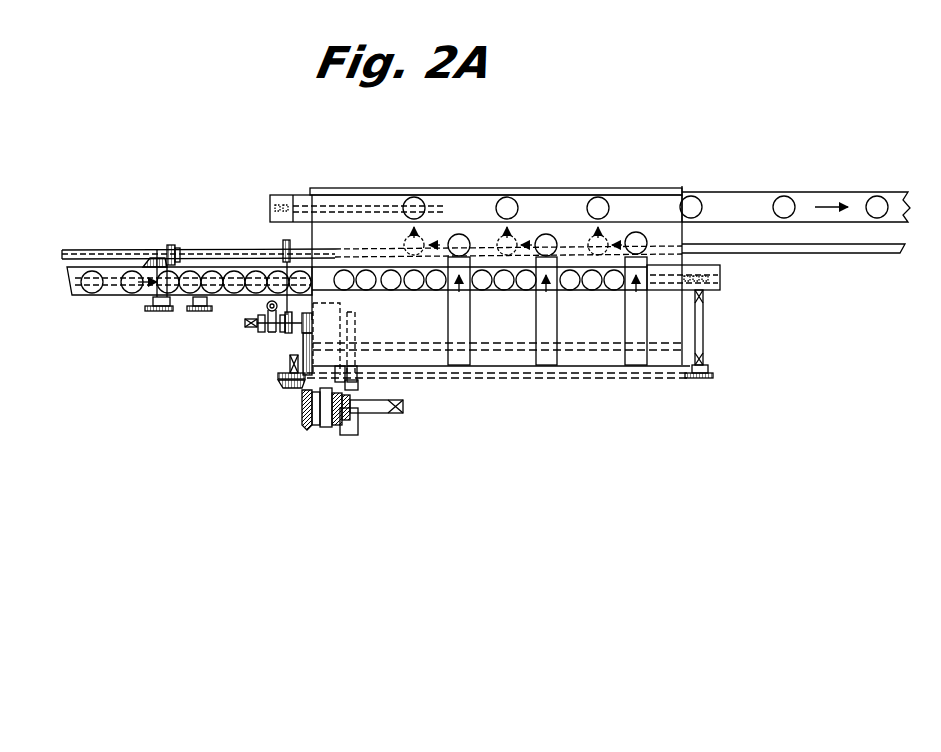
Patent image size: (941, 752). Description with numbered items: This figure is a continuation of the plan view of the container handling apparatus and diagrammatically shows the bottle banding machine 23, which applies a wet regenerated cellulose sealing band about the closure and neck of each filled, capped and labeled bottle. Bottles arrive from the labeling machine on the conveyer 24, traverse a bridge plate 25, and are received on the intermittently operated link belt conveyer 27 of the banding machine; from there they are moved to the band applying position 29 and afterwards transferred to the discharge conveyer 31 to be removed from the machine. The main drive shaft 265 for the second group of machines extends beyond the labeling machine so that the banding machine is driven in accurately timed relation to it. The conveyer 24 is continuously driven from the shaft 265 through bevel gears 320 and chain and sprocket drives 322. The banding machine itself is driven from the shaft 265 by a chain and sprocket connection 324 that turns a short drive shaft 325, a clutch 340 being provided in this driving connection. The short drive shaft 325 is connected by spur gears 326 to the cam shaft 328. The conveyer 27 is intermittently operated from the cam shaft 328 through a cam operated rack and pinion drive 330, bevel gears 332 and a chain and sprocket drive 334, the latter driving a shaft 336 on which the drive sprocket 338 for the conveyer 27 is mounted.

The bottle banding machine 23 is at (555, 185).
The discharge conveyer 31 is at (758, 178).
The main drive shaft 265 is at (68, 250).
The bevel gears 320 is at (157, 246).
The chain and sprocket connection 324 is at (284, 244).
The band applying position 29 is at (647, 243).
The drive sprocket 338 is at (722, 272).
The shaft 336 is at (705, 327).
The cam shaft 328 is at (566, 346).
The intermittently operated conveyer 27 is at (486, 292).
The spur gears 326 is at (318, 338).
The conveyer 24 is at (97, 297).
The chain and sprocket drives 322 is at (180, 313).
The bridge plate 25 is at (232, 297).
The short drive shaft 325 is at (255, 330).
The clutch 340 is at (270, 336).
The bevel gears 332 is at (292, 400).
The cam operated rack and pinion drive 330 is at (330, 437).
The chain and sprocket drive 334 is at (577, 381).